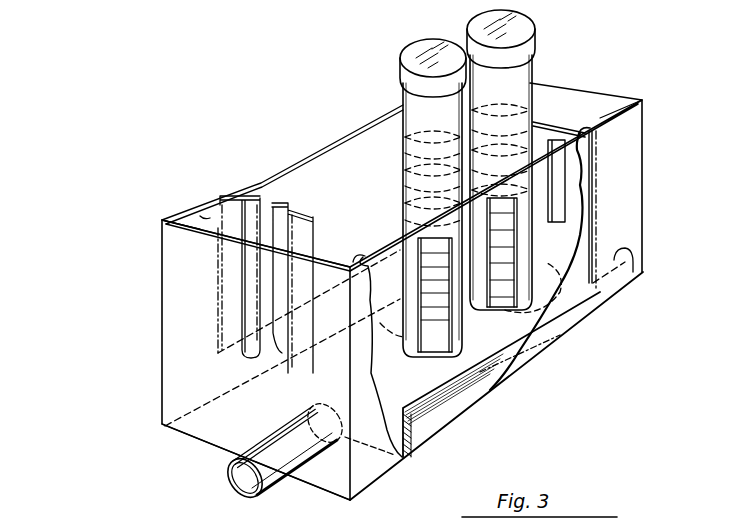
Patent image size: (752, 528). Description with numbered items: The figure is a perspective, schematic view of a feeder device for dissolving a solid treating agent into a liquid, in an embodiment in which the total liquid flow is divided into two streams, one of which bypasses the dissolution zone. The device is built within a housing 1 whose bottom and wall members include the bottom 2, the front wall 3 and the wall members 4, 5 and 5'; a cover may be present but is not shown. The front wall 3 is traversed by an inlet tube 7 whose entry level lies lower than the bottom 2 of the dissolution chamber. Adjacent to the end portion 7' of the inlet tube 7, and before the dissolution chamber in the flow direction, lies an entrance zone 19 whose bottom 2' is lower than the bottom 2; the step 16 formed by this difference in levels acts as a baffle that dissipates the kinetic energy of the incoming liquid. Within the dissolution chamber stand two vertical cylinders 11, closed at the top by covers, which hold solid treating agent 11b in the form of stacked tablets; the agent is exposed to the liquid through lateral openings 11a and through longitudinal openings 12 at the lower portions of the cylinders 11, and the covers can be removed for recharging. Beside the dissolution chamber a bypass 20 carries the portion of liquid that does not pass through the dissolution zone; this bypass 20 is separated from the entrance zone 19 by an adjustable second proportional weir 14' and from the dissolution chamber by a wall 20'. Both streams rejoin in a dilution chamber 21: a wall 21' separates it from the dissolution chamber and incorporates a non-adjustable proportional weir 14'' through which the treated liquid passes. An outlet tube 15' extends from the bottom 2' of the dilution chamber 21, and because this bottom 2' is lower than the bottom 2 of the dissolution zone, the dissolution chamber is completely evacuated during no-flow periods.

The housing 1 is at (147, 297).
The bottom of the dissolution chamber 2 is at (476, 356).
The bottom of the entrance zone and dilution chamber 2' is at (356, 375).
The front wall 3 is at (187, 322).
The wall member 4 is at (532, 88).
The wall member 5 is at (527, 186).
The wall member 5' is at (282, 164).
The inlet tube 7 is at (254, 450).
The end portion of the inlet tube 7' is at (375, 472).
The vertical cylinders 11 is at (402, 98).
The lateral openings 11a is at (503, 193).
The solid treating agent 11b is at (505, 302).
The longitudinal openings 12 is at (466, 30).
The adjustable proportional weir 14' is at (220, 222).
The non-adjustable proportional weir 14'' is at (606, 259).
The outlet tube 15' is at (513, 386).
The step 16 is at (250, 385).
The entrance zone 19 is at (200, 216).
The bypass 20 is at (244, 229).
The wall 20' is at (309, 240).
The dilution chamber 21 is at (643, 89).
The wall 21' is at (162, 236).